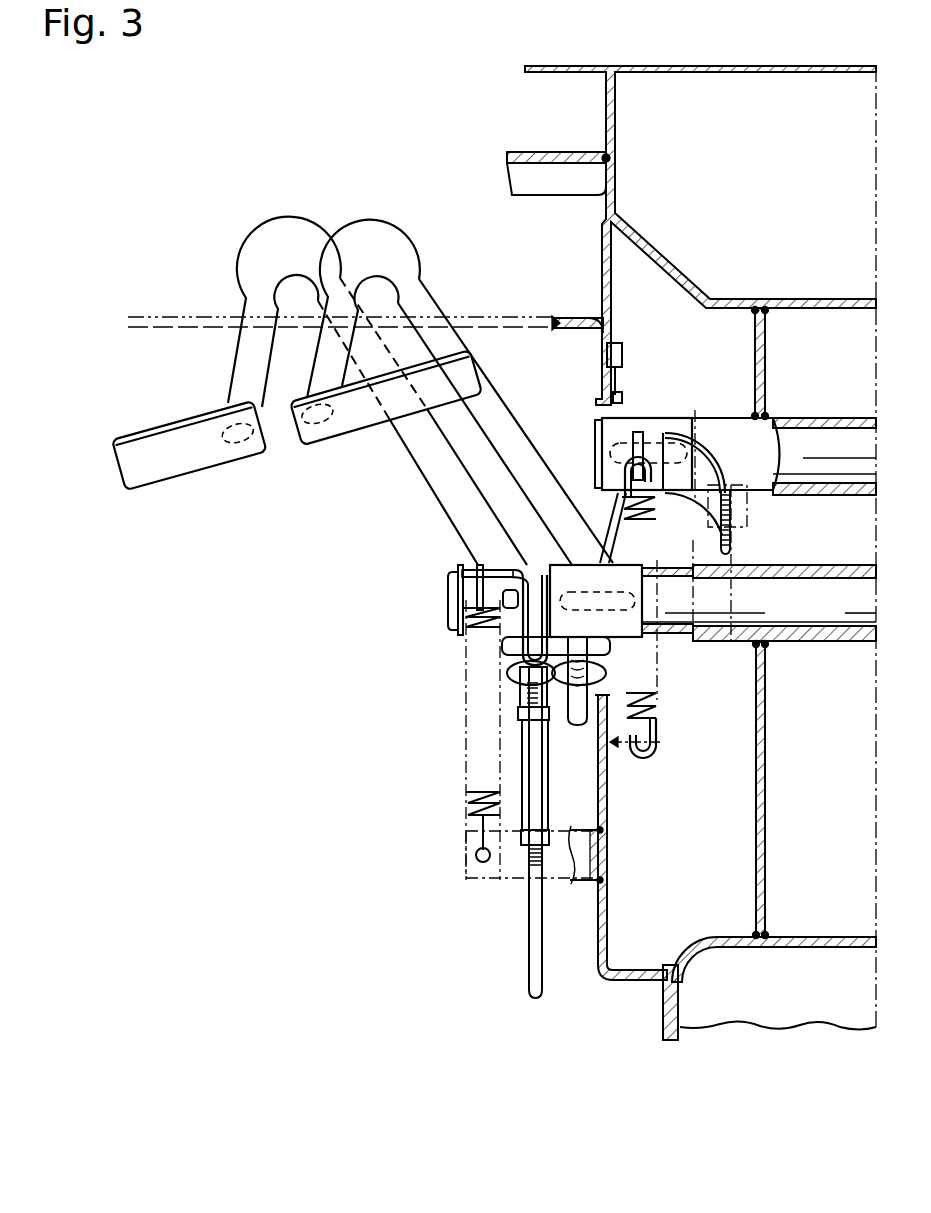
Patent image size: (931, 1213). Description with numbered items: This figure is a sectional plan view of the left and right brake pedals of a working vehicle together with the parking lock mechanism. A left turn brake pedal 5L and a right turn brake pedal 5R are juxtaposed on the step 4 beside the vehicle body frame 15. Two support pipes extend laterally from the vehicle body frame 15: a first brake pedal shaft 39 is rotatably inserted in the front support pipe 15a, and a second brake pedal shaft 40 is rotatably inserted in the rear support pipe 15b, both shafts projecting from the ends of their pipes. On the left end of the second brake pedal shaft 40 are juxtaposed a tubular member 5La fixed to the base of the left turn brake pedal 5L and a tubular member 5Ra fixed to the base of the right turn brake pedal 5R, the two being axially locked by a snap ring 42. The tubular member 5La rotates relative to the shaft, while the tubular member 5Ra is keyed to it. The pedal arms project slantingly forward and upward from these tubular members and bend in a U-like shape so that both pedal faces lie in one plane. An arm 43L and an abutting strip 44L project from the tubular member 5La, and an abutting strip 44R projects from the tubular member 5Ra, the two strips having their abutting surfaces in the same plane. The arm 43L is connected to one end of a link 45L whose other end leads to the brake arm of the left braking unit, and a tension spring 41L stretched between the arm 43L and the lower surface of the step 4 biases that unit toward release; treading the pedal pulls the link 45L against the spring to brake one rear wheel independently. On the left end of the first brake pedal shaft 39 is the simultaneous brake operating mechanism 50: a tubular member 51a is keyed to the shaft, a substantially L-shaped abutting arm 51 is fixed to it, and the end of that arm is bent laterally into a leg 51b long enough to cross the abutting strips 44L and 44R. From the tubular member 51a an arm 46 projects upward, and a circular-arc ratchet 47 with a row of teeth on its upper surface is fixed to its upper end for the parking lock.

The step 4 is at (496, 316).
The left turn brake pedal 5L is at (190, 465).
The tubular member 5La is at (478, 560).
The right turn brake pedal 5R is at (350, 430).
The tubular member 5Ra is at (580, 560).
The vehicle body frame 15 is at (757, 742).
The front support pipe 15a is at (748, 412).
The rear support pipe 15b is at (803, 644).
The first brake pedal shaft 39 is at (812, 440).
The second brake pedal shaft 40 is at (808, 621).
The tension spring 41L is at (466, 802).
The snap ring 42 is at (452, 588).
The arm 43L is at (528, 565).
The abutting strip 44L is at (520, 695).
The abutting strip 44R is at (578, 728).
The link 45L is at (535, 942).
The arm 46 is at (705, 418).
The ratchet 47 is at (722, 540).
The simultaneous brake operating mechanism 50 is at (368, 677).
The abutting arm 51 is at (613, 528).
The tubular member 51a is at (618, 418).
The leg 51b is at (610, 670).